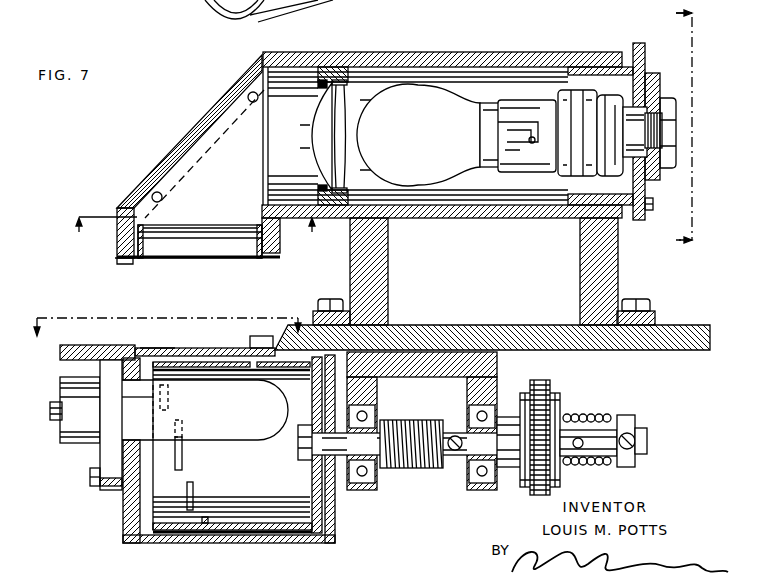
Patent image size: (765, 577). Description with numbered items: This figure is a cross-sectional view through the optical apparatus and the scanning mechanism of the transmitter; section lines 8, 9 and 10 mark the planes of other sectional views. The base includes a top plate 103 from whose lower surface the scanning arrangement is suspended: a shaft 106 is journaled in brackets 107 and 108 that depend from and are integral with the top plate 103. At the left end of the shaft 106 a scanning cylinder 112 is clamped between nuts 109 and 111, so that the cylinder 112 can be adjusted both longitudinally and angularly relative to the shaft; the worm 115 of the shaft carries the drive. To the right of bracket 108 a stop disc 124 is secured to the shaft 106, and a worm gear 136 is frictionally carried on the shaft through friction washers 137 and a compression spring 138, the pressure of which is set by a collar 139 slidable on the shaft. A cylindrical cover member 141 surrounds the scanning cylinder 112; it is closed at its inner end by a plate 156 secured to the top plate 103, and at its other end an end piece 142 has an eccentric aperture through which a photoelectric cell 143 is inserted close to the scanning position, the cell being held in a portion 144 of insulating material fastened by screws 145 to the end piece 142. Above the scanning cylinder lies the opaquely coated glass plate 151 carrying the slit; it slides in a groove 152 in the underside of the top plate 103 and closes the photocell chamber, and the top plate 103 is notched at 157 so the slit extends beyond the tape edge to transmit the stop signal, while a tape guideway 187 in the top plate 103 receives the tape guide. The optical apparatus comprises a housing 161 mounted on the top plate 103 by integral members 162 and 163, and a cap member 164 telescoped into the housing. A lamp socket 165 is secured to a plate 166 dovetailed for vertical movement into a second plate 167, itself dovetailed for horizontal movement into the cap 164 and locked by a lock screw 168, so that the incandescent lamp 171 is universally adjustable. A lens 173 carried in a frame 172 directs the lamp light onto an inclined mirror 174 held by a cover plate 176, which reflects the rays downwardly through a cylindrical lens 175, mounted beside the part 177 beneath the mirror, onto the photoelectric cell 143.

The section line 8- 8 is at (168, 316).
The section line 9- 9 is at (196, 234).
The section line 10- 10 is at (673, 126).
The top plate 103 is at (477, 335).
The shaft 106 is at (365, 452).
The bracket 107 is at (365, 492).
The bracket 108 is at (472, 493).
The nut 109 is at (309, 463).
The nut 111 is at (313, 477).
The scanning cylinder 112 is at (258, 544).
The worm 115 is at (442, 420).
The stop disc 124 is at (520, 397).
The worm gear 136 is at (538, 381).
The friction washers 137 is at (551, 393).
The compression spring 138 is at (596, 413).
The collar 139 is at (633, 425).
The cover member 141 is at (175, 544).
The end piece 142 is at (123, 510).
The photoelectric cell 143 is at (58, 397).
The portion of insulating material 144 is at (108, 453).
The screws 145 is at (92, 474).
The glass plate 151 is at (204, 347).
The groove 152 is at (88, 347).
The plate 156 is at (335, 524).
The notch 157 is at (250, 340).
The housing 161 is at (520, 50).
The integral member 162 is at (388, 250).
The integral member 163 is at (580, 247).
The cap member 164 is at (636, 44).
The lamp socket 165 is at (588, 96).
The plate 166 is at (666, 97).
The second plate 167 is at (650, 73).
The lock screw 168 is at (650, 204).
The incandescent lamp 171 is at (427, 100).
The frame 172 is at (338, 80).
The lens 173 is at (321, 98).
The inclined mirror 174 is at (226, 130).
The cylindrical lens 175 is at (198, 231).
The cover plate 176 is at (181, 141).
The flange 177 is at (253, 227).
The tape guideway 187 is at (157, 346).